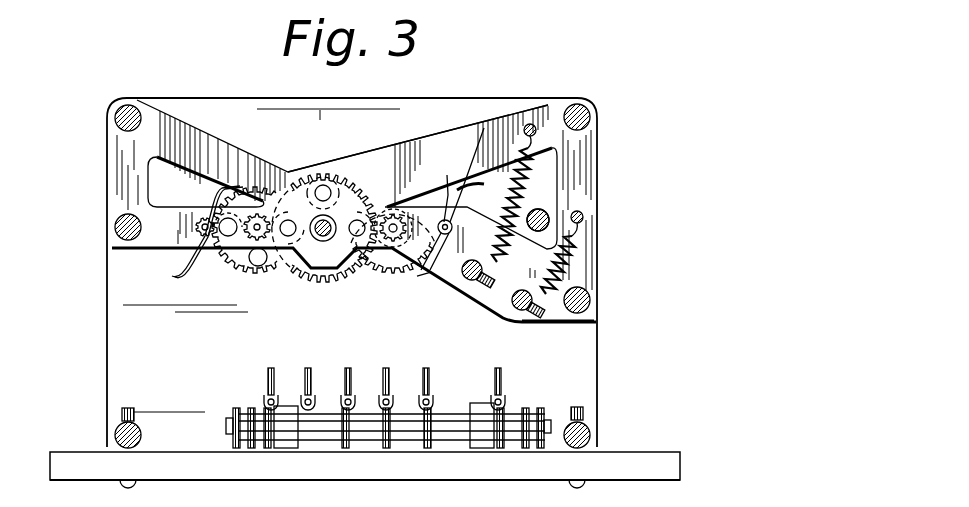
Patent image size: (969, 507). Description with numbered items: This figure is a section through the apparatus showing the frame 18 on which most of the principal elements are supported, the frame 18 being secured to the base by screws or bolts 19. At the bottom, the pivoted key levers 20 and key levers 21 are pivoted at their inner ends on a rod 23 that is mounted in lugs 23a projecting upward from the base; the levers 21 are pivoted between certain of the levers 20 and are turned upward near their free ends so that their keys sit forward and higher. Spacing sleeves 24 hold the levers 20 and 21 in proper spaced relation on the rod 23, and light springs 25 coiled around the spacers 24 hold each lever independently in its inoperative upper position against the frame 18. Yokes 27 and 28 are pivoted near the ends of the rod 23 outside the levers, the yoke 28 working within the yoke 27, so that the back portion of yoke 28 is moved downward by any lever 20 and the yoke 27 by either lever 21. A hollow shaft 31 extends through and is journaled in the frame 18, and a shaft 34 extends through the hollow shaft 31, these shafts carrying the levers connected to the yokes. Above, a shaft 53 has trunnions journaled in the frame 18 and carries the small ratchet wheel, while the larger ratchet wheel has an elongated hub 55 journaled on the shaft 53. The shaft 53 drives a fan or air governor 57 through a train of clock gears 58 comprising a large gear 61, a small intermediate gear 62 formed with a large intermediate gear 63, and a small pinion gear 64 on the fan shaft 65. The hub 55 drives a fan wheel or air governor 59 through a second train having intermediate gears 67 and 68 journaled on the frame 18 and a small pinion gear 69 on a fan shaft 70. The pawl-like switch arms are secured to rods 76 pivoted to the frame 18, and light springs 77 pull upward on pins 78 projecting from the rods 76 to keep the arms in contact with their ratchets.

The frame 18 is at (117, 205).
The screws or bolts 19 is at (138, 408).
The key levers 20 is at (278, 402).
The key levers 21 is at (312, 400).
The rod 23 is at (225, 427).
The lugs 23a is at (493, 392).
The spacing sleeves 24 is at (333, 437).
The light springs 25 is at (353, 397).
The yoke 27 is at (229, 407).
The yoke 28 is at (251, 400).
The hollow shaft 31 is at (533, 213).
The shaft 34 is at (546, 216).
The shaft 53 is at (329, 237).
The elongated hub 55 is at (310, 263).
The fan or air governor 57 is at (484, 130).
The train of clock gears 58 is at (448, 175).
The fan wheel or air governor 59 is at (173, 276).
The large gear 61 is at (327, 186).
The small intermediate gear 62 is at (391, 167).
The large intermediate gear 63 is at (425, 200).
The small pinion gear 64 is at (483, 186).
The fan shaft 65 is at (450, 233).
The intermediate gear 67 is at (216, 300).
The intermediate gear 68 is at (233, 274).
The small pinion gear 69 is at (226, 265).
The fan shaft 70 is at (199, 229).
The rods 76 is at (462, 282).
The light springs 77 is at (530, 167).
The pins 78 is at (600, 323).